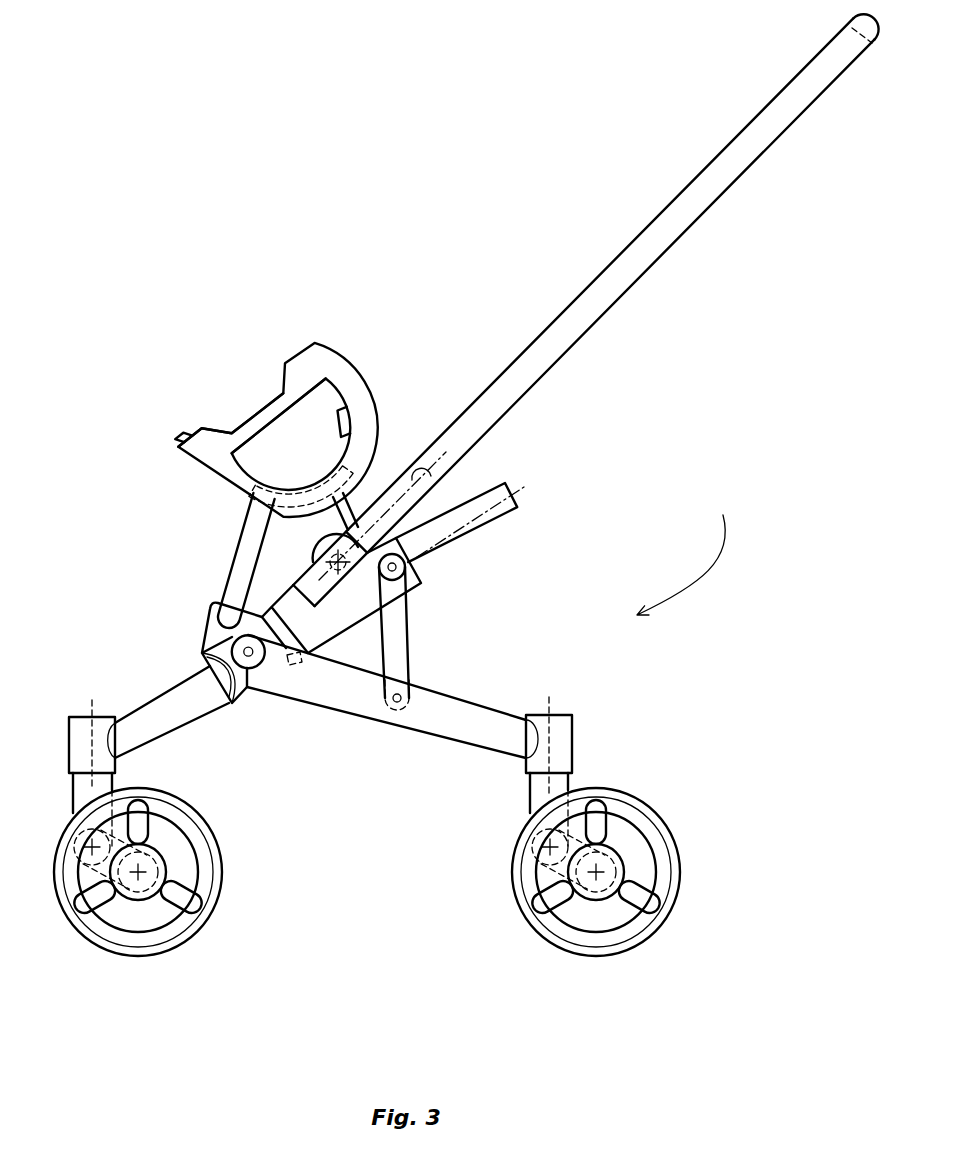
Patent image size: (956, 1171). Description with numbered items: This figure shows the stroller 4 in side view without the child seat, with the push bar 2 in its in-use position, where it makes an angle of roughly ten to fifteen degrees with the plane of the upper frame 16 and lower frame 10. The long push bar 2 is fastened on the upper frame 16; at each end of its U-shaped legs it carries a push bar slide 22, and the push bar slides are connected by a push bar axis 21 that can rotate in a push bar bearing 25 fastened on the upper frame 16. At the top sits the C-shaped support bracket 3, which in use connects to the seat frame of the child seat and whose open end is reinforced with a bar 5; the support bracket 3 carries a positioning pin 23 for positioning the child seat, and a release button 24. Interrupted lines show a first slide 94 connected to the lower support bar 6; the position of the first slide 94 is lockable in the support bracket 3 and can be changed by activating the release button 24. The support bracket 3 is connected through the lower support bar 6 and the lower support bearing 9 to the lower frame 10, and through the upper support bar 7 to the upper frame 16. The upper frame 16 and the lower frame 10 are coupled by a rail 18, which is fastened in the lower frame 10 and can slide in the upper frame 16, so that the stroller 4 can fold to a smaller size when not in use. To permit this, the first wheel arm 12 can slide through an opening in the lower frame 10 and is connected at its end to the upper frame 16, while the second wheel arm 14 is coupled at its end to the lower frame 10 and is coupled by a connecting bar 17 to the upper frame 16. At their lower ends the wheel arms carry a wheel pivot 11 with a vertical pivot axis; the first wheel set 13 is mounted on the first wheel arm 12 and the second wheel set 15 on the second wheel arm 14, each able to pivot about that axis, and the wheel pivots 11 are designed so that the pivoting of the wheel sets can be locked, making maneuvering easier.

The push bar 2 is at (630, 252).
The support bracket 3 is at (325, 357).
The stroller 4 is at (683, 552).
The bar 5 is at (267, 413).
The lower support bar 6 is at (245, 510).
The upper support bar 7 is at (353, 512).
The lower support bearing 9 is at (207, 623).
The lower frame 10 is at (243, 688).
The wheel pivot 11 is at (80, 733).
The first wheel arm 12 is at (173, 703).
The first wheel set 13 is at (218, 867).
The second wheel arm 14 is at (450, 718).
The second wheel set 15 is at (518, 865).
The upper frame 16 is at (422, 585).
The connecting bar 17 is at (392, 660).
The rail 18 is at (477, 530).
The push bar axis 21 is at (325, 553).
The push bar slide 22 is at (432, 475).
The positioning pin 23 is at (180, 433).
The release button 24 is at (348, 413).
The push bar bearing 25 is at (312, 541).
The first slide 94 is at (293, 500).